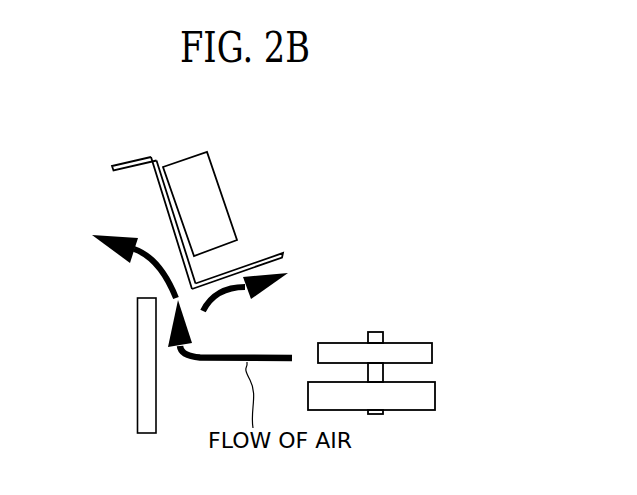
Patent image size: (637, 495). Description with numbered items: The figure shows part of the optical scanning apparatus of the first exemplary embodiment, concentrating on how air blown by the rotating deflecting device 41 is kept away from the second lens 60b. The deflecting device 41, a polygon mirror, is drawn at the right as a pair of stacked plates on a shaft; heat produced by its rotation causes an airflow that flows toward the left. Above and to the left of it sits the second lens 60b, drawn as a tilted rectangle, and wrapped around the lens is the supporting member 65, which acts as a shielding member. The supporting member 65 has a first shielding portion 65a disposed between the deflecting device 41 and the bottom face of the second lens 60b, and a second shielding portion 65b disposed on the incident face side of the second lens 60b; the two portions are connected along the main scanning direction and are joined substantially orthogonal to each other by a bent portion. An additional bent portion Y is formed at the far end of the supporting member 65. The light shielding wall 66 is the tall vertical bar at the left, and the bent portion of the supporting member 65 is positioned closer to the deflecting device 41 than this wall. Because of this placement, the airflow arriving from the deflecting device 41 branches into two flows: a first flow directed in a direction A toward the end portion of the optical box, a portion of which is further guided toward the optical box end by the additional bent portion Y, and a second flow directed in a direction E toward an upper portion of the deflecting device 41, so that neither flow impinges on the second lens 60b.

The supporting member 65 is at (110, 165).
The first shielding portion 65a is at (272, 250).
The second shielding portion 65b is at (157, 188).
The second lens 60b is at (213, 180).
The light shielding wall 66 is at (138, 350).
The deflecting device 41 is at (413, 343).
The additional bent portion Y is at (135, 160).
The direction A is at (125, 260).
The direction E is at (255, 285).